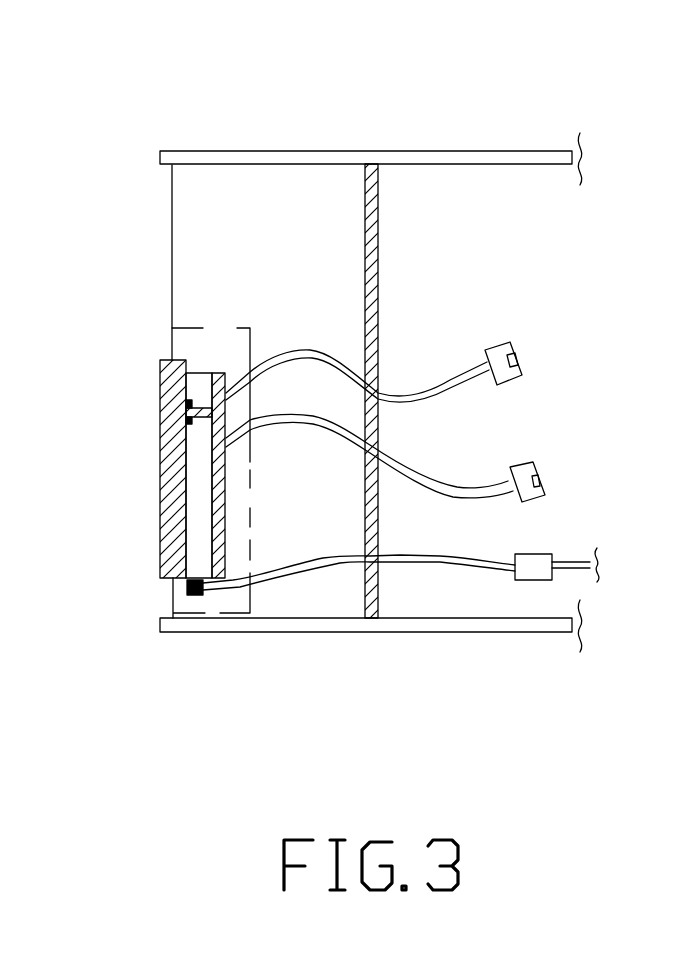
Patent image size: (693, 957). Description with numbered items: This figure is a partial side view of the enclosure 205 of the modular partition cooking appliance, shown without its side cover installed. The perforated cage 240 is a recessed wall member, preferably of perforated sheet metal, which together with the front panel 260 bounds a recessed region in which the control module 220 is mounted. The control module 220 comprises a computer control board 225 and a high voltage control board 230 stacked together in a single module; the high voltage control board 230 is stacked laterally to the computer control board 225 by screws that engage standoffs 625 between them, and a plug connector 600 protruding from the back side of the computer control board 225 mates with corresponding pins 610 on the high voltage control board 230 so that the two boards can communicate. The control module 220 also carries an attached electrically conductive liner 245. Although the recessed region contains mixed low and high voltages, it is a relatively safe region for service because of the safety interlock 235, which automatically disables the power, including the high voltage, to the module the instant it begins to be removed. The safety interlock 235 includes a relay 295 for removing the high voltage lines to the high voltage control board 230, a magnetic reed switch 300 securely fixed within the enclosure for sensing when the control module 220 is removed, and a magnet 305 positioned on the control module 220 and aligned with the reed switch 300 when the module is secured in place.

The enclosure 205 is at (270, 150).
The perforated cage 240 is at (378, 215).
The front panel 260 is at (143, 258).
The standoffs 625 is at (205, 370).
The high voltage control board 230 is at (228, 378).
The relay 295 is at (552, 552).
The plug connector 600 is at (188, 400).
The pins 610 is at (200, 423).
The control module 220 is at (198, 491).
The computer control board 225 is at (177, 542).
The electrically conductive liner 245 is at (253, 530).
The safety interlock 235 is at (570, 633).
The magnetic reed switch 300 is at (197, 595).
The magnet 305 is at (320, 655).